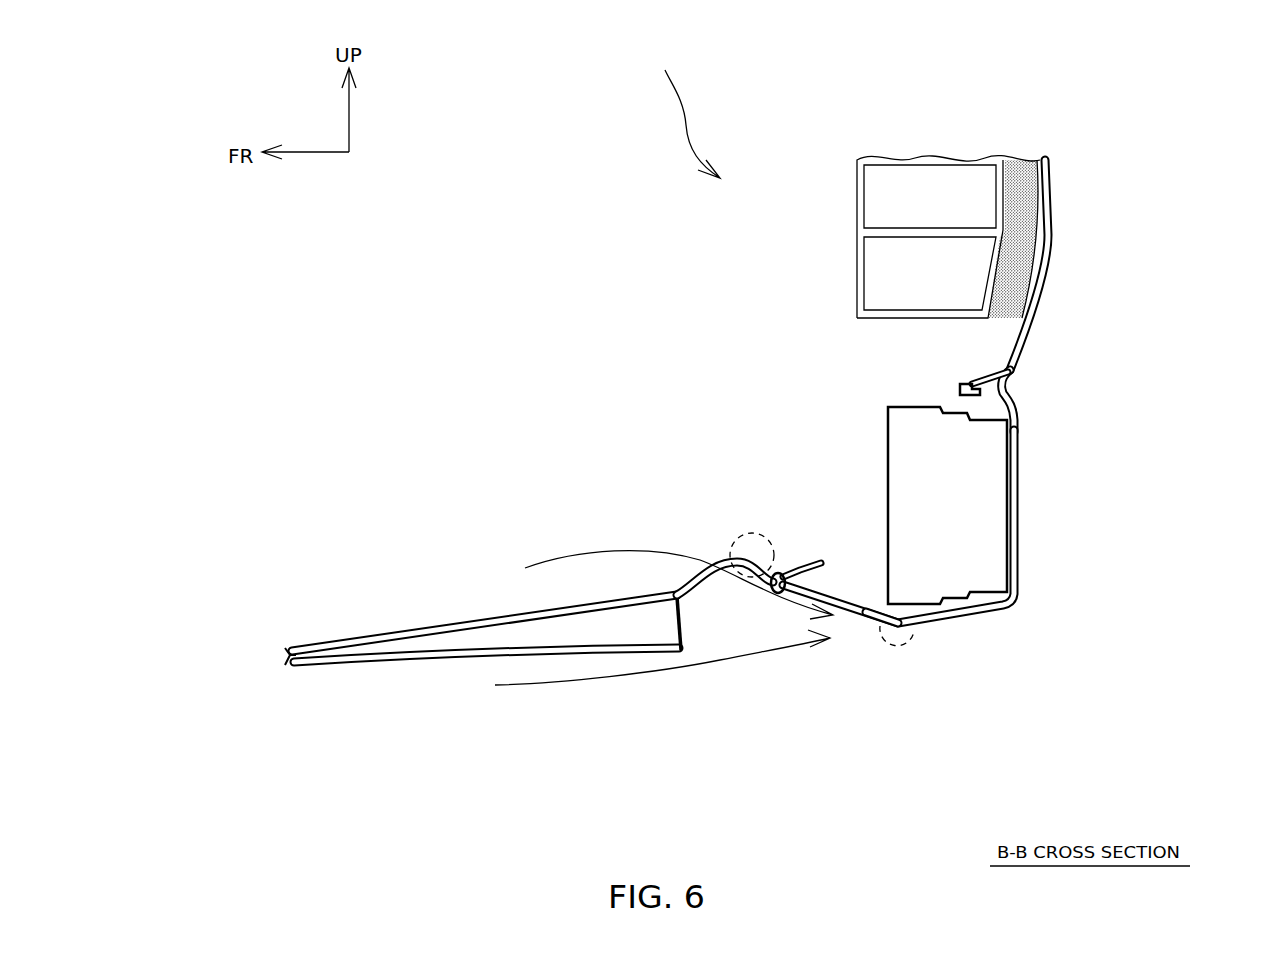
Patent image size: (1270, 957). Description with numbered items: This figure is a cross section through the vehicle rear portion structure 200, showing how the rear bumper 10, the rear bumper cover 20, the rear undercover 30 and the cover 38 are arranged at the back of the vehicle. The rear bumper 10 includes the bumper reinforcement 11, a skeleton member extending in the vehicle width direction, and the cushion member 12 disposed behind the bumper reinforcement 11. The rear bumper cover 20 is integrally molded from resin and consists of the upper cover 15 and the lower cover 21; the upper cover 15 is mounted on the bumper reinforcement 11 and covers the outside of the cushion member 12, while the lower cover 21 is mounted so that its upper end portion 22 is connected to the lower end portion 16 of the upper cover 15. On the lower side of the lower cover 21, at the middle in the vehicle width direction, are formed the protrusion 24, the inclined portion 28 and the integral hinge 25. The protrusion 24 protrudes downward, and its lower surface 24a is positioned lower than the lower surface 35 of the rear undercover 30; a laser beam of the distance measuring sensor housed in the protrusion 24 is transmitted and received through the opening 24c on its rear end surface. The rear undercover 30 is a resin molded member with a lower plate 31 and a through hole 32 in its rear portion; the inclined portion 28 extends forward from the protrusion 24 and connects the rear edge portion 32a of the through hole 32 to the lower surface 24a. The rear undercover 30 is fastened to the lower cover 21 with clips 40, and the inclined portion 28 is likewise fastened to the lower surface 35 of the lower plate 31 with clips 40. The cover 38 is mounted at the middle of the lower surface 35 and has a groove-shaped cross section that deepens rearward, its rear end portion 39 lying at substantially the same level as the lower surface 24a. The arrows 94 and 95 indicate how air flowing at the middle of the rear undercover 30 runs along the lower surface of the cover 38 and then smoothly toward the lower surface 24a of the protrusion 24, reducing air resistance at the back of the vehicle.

The rear bumper 10 is at (948, 168).
The bumper reinforcement 11 is at (931, 158).
The cushion member 12 is at (1013, 189).
The upper cover 15 is at (1050, 242).
The lower end portion 16 is at (992, 377).
The rear bumper cover 20 is at (982, 296).
The lower cover 21 is at (1024, 398).
The upper end portion 22 is at (962, 397).
The protrusion 24 is at (976, 555).
The lower surface 24a is at (990, 617).
The opening 24c is at (1022, 475).
The integral hinge 25 is at (916, 635).
The inclined portion 28 is at (851, 607).
The rear undercover 30 is at (494, 616).
The lower plate 31 is at (435, 622).
The through hole 32 is at (715, 570).
The rear edge portion 32a is at (775, 538).
The lower surface 35 is at (775, 590).
The cover 38 is at (460, 660).
The rear end portion 39 is at (685, 630).
The clips 40 is at (788, 594).
The air flow 94 is at (540, 683).
The air flow 95 is at (585, 552).
The vehicle rear portion structure 200 is at (679, 113).